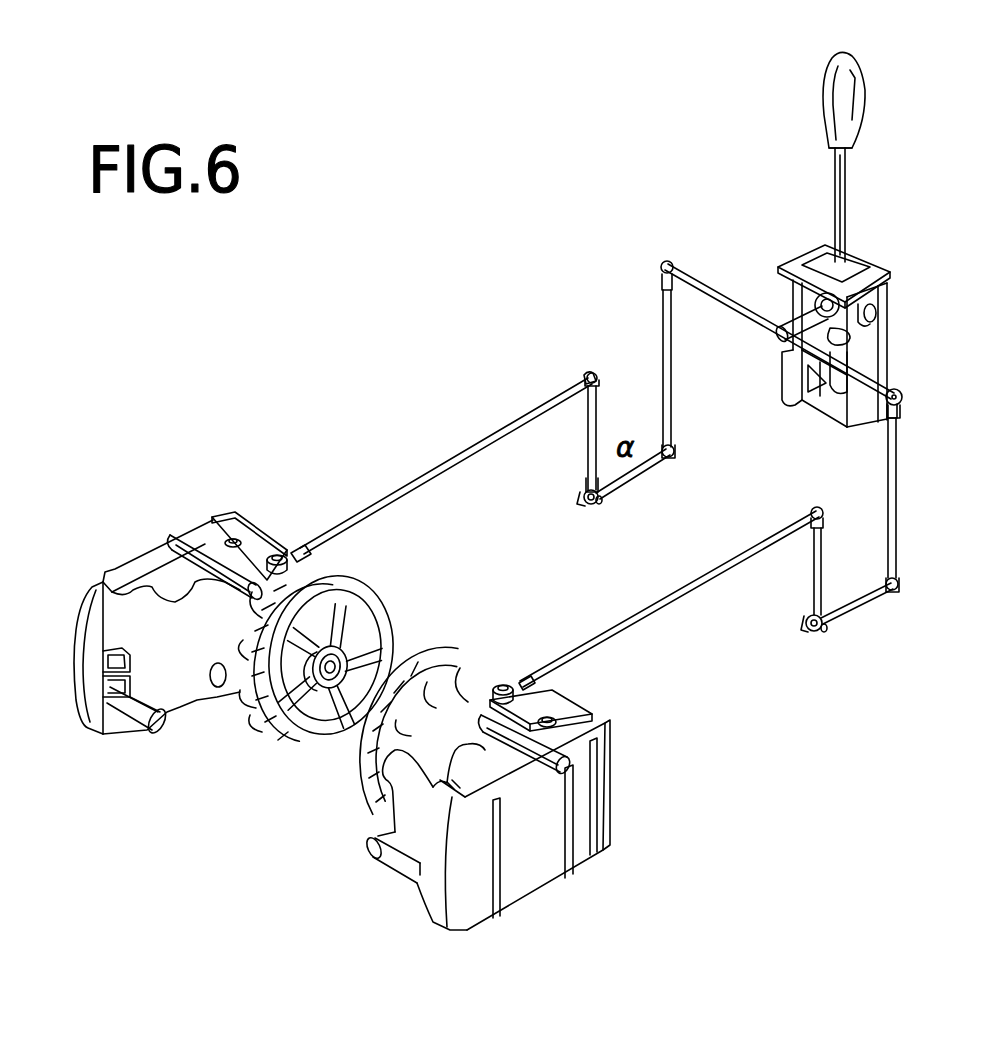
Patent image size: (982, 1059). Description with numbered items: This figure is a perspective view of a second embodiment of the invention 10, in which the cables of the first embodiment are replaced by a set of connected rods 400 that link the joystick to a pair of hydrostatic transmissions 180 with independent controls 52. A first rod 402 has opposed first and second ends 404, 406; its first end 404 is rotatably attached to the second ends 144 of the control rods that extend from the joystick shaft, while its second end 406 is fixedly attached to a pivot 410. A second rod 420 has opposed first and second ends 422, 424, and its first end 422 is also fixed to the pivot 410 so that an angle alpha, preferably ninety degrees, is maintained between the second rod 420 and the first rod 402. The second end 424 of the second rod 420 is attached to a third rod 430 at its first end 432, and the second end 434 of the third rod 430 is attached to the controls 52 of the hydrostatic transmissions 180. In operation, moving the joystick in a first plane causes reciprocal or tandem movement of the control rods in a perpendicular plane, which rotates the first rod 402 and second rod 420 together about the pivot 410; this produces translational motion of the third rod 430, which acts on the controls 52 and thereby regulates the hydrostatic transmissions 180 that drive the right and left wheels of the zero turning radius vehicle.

The shift lever assembly 10 is at (764, 223).
The lever controls 52 is at (273, 552).
The second ends 144 is at (675, 452).
The hydrostatic transmissions 180 is at (137, 566).
The connected rods 400 is at (928, 622).
The first rod 402 is at (631, 479).
The first end 404 is at (668, 462).
The second end 406 is at (605, 494).
The pivot 410 is at (586, 503).
The second rod 420 is at (588, 428).
The first end 422 is at (584, 481).
The second end 424 is at (597, 380).
The third rod 430 is at (434, 470).
The first end 432 is at (585, 380).
The second end 434 is at (306, 548).